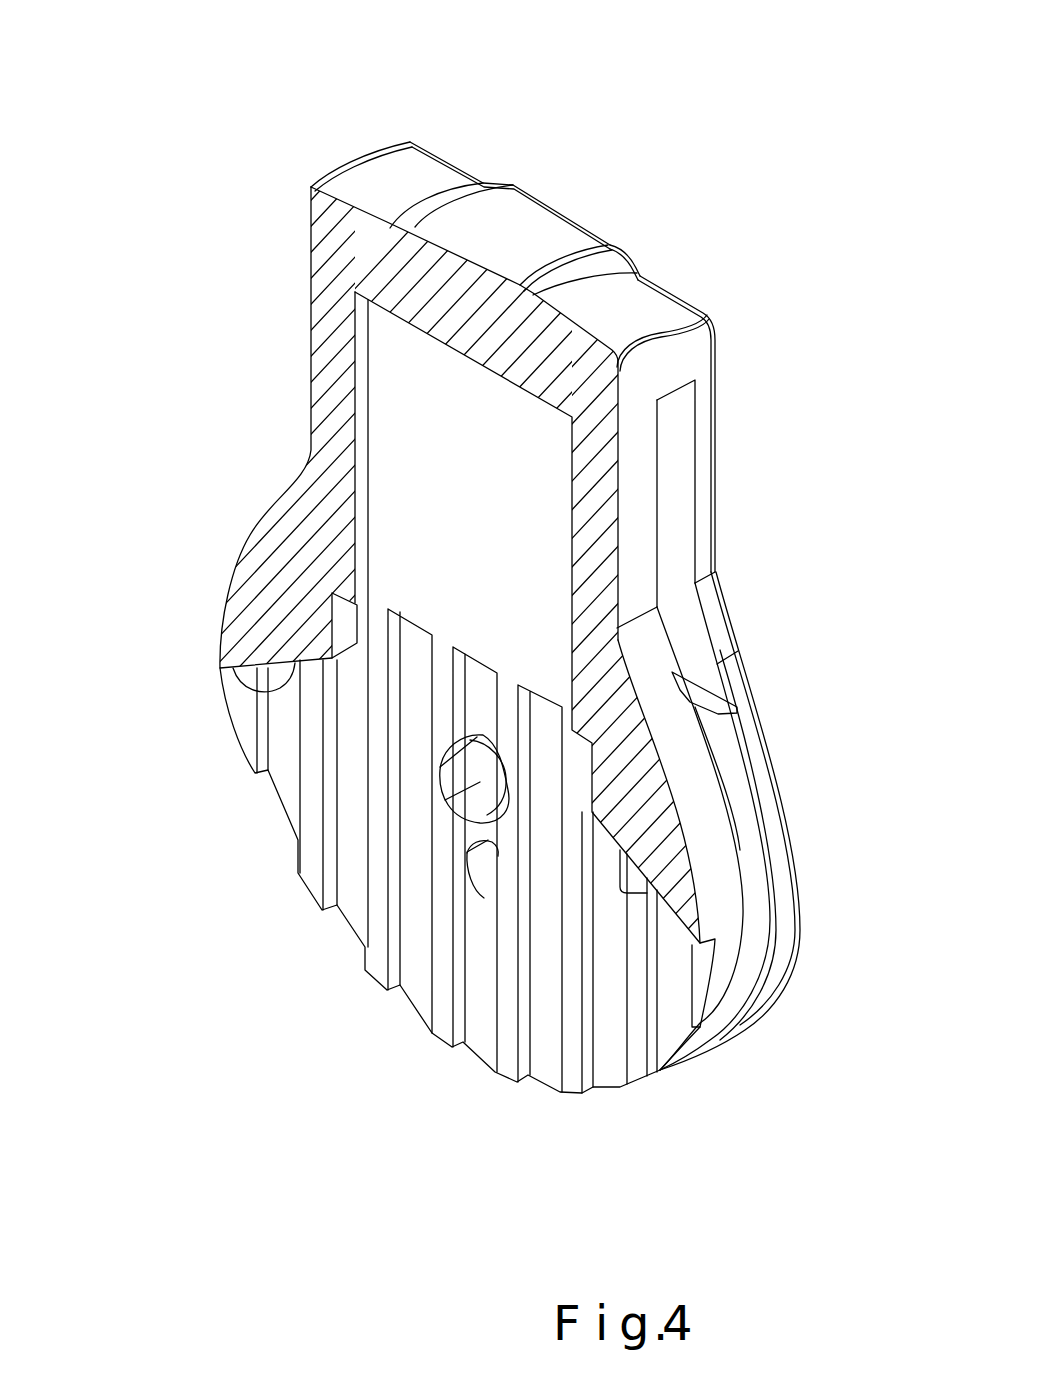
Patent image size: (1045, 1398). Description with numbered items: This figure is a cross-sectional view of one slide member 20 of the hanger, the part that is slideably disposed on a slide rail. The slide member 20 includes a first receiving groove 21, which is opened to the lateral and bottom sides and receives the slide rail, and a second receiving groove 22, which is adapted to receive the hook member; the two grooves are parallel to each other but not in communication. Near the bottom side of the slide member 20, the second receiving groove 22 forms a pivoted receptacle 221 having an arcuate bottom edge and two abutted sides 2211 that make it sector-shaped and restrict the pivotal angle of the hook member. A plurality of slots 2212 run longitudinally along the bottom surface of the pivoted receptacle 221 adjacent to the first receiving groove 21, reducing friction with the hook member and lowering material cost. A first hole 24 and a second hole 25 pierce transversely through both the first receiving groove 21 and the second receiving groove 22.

The slide member 20 is at (659, 95).
The first receiving groove 21 is at (747, 945).
The second receiving groove 22 is at (557, 510).
The pivoted receptacle 221 is at (547, 758).
The abutted sides 2211 is at (258, 688).
The slots 2212 is at (550, 1067).
The first hole 24 is at (465, 798).
The second hole 25 is at (485, 878).